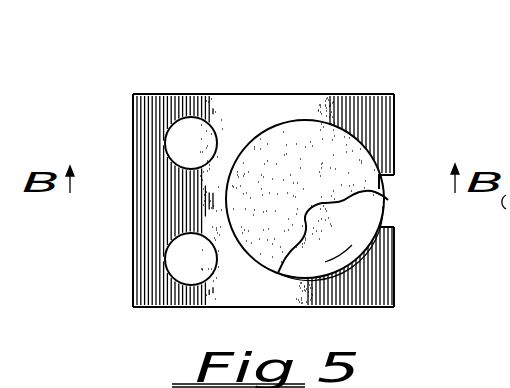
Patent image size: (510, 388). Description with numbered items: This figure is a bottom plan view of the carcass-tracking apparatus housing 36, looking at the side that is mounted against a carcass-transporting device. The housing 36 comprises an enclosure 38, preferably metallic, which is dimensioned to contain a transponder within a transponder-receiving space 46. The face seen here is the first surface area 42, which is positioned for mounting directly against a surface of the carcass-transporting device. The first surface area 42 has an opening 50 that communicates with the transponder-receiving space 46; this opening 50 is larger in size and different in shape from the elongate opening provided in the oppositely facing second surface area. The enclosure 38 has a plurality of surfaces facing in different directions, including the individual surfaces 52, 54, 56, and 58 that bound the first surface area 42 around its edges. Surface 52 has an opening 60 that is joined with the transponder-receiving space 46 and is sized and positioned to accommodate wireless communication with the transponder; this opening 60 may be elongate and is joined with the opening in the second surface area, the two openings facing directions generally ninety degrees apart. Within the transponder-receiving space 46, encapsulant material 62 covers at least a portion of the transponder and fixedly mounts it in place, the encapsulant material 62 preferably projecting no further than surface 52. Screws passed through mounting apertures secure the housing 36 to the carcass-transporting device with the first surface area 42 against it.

The carcass-tracking apparatus housing 36 is at (234, 50).
The enclosure 38 is at (180, 92).
The first surface area 42 is at (275, 107).
The transponder-receiving space 46 is at (303, 245).
The opening 50 is at (305, 122).
The surface 52 is at (395, 133).
The surface 54 is at (301, 92).
The surface 56 is at (207, 307).
The surface 58 is at (132, 137).
The opening 60 is at (397, 218).
The encapsulant material 62 is at (259, 170).